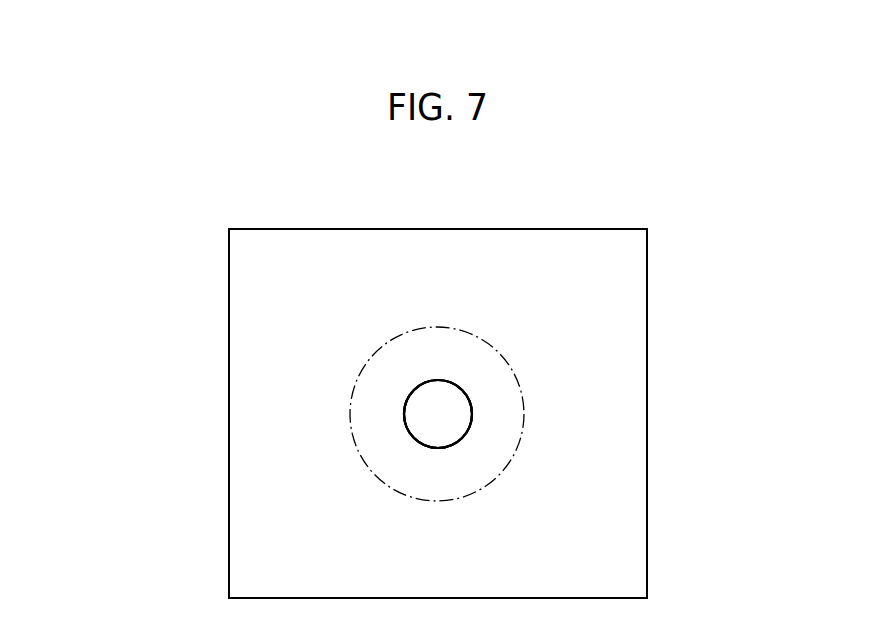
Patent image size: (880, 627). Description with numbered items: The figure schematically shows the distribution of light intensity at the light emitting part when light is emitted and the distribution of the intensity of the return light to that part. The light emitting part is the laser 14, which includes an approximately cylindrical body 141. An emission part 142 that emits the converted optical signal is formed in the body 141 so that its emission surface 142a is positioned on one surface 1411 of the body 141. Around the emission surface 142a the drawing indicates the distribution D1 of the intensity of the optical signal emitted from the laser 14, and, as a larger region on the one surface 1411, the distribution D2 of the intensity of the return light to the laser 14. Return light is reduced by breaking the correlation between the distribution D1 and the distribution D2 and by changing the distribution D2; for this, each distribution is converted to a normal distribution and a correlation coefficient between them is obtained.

The laser 14 is at (589, 228).
The body 141 is at (228, 312).
The one surface 1411 is at (435, 243).
The emission part 142 is at (473, 392).
The emission surface 142a is at (420, 413).
The distribution of the intensity of the optical signal D1 is at (437, 449).
The distribution of the intensity of the return light D2 is at (523, 428).